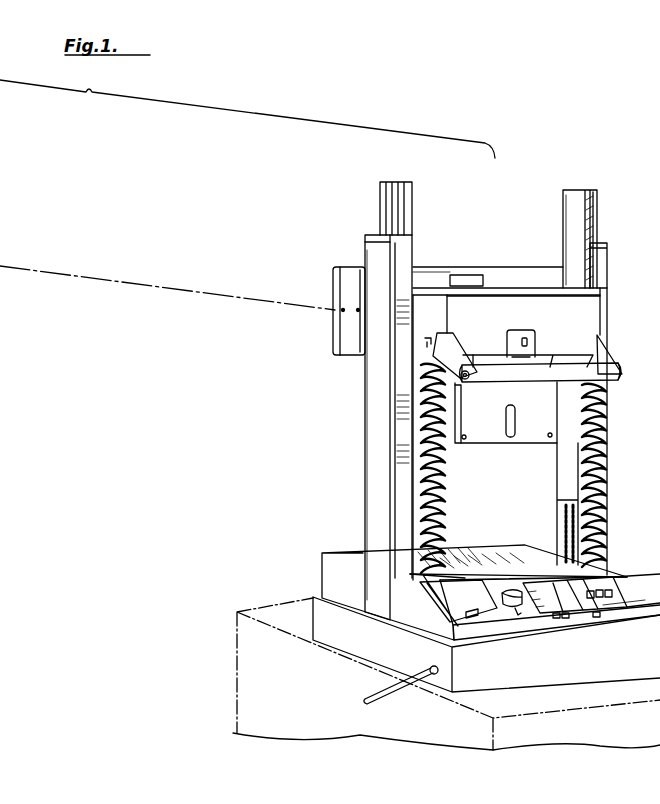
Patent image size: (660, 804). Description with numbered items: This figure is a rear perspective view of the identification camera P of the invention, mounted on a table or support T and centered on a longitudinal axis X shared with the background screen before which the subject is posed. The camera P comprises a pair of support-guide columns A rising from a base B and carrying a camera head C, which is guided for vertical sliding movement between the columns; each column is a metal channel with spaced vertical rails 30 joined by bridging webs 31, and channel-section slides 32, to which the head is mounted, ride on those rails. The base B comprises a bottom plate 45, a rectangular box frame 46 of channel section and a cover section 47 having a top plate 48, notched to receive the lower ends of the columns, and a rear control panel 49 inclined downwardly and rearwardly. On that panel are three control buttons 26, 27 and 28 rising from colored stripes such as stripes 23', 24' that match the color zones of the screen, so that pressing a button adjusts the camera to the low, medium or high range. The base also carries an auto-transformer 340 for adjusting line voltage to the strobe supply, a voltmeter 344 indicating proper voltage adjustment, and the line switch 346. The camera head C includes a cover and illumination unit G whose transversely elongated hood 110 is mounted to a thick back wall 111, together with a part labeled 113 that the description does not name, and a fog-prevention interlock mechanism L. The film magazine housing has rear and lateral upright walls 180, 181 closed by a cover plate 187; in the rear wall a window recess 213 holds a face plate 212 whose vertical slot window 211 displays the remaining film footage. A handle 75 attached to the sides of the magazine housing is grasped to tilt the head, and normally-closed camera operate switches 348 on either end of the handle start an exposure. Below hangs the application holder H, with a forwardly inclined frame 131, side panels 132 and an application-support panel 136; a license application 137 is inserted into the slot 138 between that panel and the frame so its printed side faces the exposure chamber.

The common longitudinal axis X is at (88, 283).
The hood 110 is at (333, 325).
The guide plate edge 113 is at (350, 272).
The cover and illumination unit G is at (327, 349).
The bridging webs 31 is at (373, 435).
The vertical rails 30 is at (403, 403).
The support-guide columns A is at (359, 471).
The slides 32 is at (381, 206).
The camera P is at (591, 187).
The back wall 111 is at (538, 254).
The fog-prevention interlock mechanism L is at (453, 272).
The camera head C is at (486, 263).
The cover plate 187 is at (601, 291).
The lateral upright wall 181 is at (431, 437).
The rear upright wall 180 is at (523, 309).
The handle 75 is at (603, 373).
The auto-transformer 340 is at (639, 375).
The license application 137 is at (545, 357).
The slot 138 is at (467, 353).
The window recess 213 is at (527, 325).
The window 211 is at (534, 345).
The face plate 212 is at (518, 357).
The camera operate switches 348 is at (459, 387).
The application holder and exposure chamber unit H is at (491, 449).
The frame 131 is at (450, 442).
The application-support panel 136 is at (523, 430).
The side panels 132 is at (417, 378).
The cover section 47 is at (335, 582).
The base B is at (313, 571).
The top plate 48 is at (493, 529).
The voltmeter 344 is at (485, 604).
The line switch 346 is at (520, 620).
The rear control panel 49 is at (558, 590).
The control button 27 is at (603, 590).
The control button 28 is at (613, 594).
The control button 26 is at (587, 607).
The colored stripe 23' is at (587, 631).
The colored stripe 24' is at (624, 632).
The box frame 46 is at (343, 638).
The bottom plate 45 is at (443, 694).
The support T is at (236, 611).